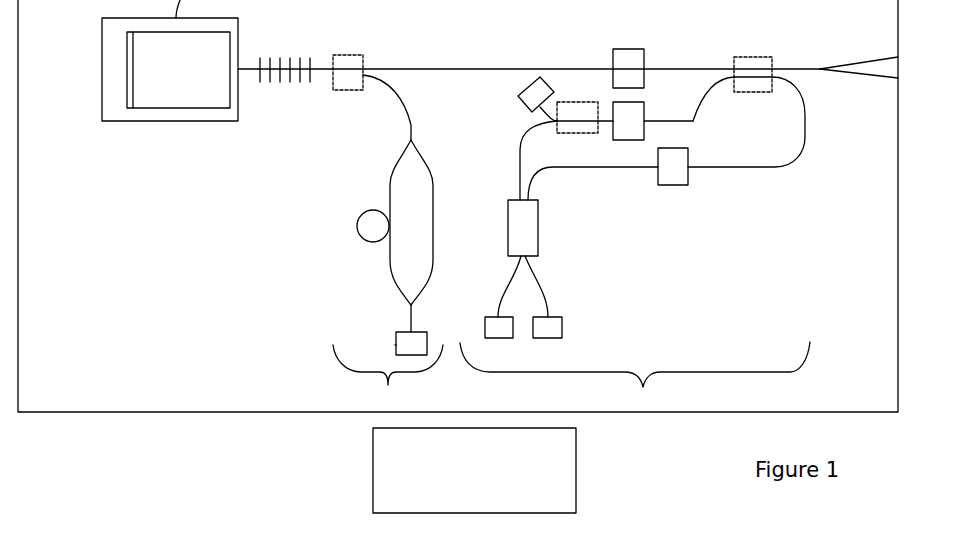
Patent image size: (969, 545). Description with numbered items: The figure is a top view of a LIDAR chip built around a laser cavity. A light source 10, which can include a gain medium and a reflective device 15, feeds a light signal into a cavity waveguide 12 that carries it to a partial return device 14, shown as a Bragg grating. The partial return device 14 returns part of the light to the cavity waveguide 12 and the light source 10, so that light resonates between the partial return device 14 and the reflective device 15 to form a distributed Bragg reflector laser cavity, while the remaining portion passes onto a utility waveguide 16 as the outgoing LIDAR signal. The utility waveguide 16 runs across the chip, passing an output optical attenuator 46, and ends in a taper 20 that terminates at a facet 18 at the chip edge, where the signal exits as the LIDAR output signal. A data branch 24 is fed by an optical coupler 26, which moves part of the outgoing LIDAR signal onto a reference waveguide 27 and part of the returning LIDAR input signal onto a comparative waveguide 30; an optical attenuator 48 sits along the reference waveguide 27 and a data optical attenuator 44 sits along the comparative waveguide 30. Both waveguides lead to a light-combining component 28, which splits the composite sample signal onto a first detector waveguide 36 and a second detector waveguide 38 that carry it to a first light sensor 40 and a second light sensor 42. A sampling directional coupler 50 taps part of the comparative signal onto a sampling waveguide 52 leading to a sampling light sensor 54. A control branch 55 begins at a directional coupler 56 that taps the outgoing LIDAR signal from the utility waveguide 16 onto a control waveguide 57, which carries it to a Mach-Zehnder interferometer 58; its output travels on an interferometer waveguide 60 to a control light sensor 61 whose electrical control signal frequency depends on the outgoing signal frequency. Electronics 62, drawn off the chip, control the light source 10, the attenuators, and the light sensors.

The light source 10 is at (163, 108).
The reflective device 15 is at (127, 70).
The cavity waveguide 12 is at (245, 65).
The partial return device 14 is at (294, 96).
The utility waveguide 16 is at (415, 68).
The facet 18 is at (898, 65).
The taper 20 is at (874, 60).
The data branch 24 is at (635, 378).
The optical coupler 26 is at (768, 57).
The reference waveguide 27 is at (775, 165).
The light-combining component 28 is at (538, 208).
The comparative waveguide 30 is at (693, 123).
The first detector waveguide 36 is at (508, 287).
The second detector waveguide 38 is at (542, 284).
The first light sensor 40 is at (485, 317).
The second light sensor 42 is at (562, 318).
The data optical attenuator 44 is at (644, 118).
The output optical attenuator 46 is at (615, 49).
The optical attenuator 48 is at (657, 182).
The sampling directional coupler 50 is at (577, 133).
The sampling waveguide 52 is at (545, 110).
The sampling light sensor 54 is at (518, 93).
The control branch 55 is at (388, 276).
The directional coupler 56 is at (350, 55).
The control waveguide 57 is at (397, 94).
The interferometer 58 is at (348, 200).
The interferometer waveguide 60 is at (410, 326).
The control light sensor 61 is at (395, 345).
The electronics 62 is at (372, 452).